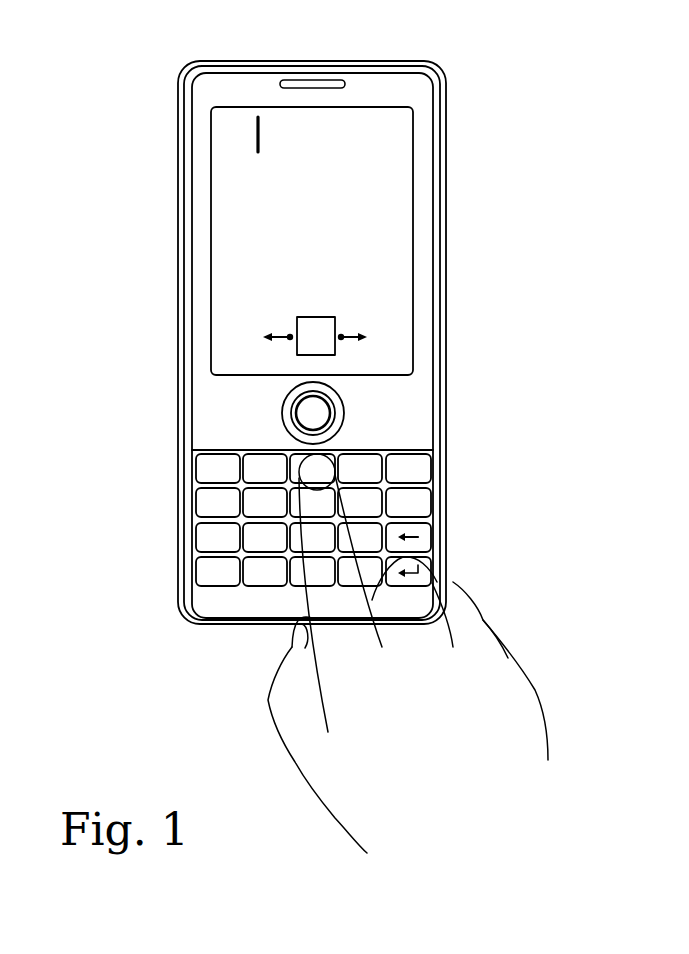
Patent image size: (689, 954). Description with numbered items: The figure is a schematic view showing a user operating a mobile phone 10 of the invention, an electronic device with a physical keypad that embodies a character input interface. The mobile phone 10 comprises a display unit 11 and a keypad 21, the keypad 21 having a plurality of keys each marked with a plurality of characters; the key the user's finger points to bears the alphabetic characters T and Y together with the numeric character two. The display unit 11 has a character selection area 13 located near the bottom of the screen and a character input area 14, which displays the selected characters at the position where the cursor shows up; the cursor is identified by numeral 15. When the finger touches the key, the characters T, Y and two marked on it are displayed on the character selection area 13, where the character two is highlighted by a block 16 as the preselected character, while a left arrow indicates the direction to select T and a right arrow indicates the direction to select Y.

The mobile phone 10 is at (173, 130).
The display unit 11 is at (207, 280).
The character selection area 13 is at (228, 351).
The character input area 14 is at (214, 155).
The cursor 15 is at (262, 128).
The block 16 is at (342, 322).
The keypad 21 is at (188, 470).